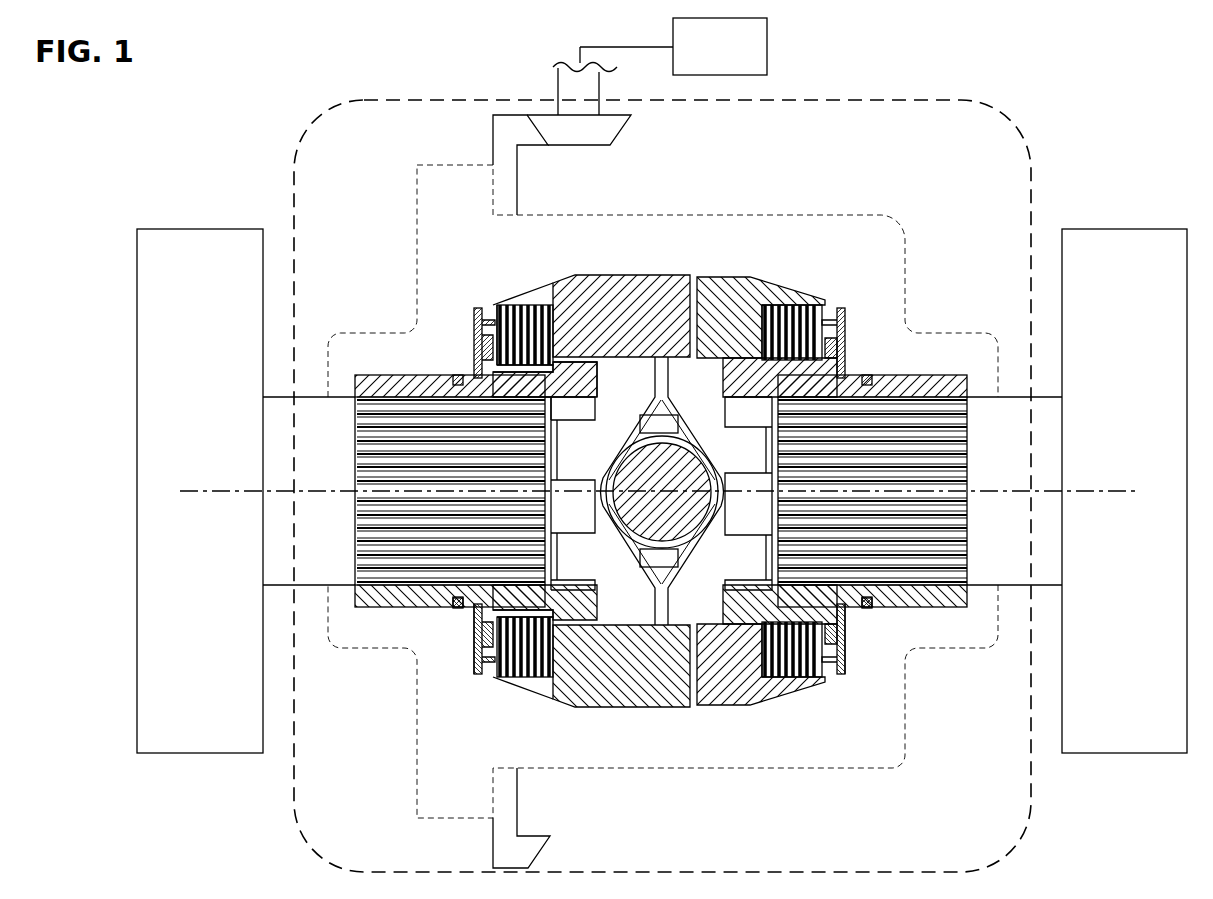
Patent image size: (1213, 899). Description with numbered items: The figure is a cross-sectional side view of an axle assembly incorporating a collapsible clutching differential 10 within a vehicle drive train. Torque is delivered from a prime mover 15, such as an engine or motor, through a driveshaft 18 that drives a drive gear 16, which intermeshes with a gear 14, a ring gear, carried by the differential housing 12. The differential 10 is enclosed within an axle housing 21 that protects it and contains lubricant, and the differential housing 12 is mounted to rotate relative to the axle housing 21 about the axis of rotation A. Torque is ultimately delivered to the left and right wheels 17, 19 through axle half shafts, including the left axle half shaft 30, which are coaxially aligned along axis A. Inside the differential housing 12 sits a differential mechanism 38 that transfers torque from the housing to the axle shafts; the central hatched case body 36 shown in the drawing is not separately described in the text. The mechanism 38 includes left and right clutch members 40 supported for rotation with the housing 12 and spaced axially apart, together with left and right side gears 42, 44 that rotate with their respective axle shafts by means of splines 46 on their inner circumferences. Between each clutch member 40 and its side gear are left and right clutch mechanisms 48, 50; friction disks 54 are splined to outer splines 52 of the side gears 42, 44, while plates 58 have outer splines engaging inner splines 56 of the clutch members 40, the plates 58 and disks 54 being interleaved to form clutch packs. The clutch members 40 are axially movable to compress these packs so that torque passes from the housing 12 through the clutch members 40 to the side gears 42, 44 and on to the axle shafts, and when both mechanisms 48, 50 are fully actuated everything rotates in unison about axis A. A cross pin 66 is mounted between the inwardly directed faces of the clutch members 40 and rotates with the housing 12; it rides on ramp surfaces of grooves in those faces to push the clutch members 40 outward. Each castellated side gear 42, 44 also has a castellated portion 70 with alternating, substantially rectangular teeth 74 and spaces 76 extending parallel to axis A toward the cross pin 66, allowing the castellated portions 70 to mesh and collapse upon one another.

The collapsible clutching differential 10 is at (1004, 178).
The differential housing 12 is at (717, 212).
The gear 14 is at (493, 133).
The prime mover 15 is at (767, 52).
The drive gear 16 is at (622, 132).
The left wheel 17 is at (193, 362).
The driveshaft 18 is at (557, 80).
The right wheel 19 is at (1116, 330).
The axle housing 21 is at (863, 100).
The left axle half shaft 30 is at (282, 592).
The differential case 36 is at (694, 684).
The differential mechanism 38 is at (458, 341).
The clutch members 40 is at (550, 303).
The left side gear 42 is at (366, 384).
The right side gear 44 is at (971, 386).
The splines 46 is at (375, 398).
The left clutch mechanism 48 is at (506, 648).
The right clutch mechanism 50 is at (829, 663).
The splines 52 is at (556, 627).
The friction disks 54 is at (549, 386).
The splines 56 is at (520, 680).
The plates 58 is at (510, 303).
The cross pin 66 is at (672, 466).
The castellated portion 70 is at (598, 548).
The teeth 74 is at (560, 486).
The spaces 76 is at (580, 418).